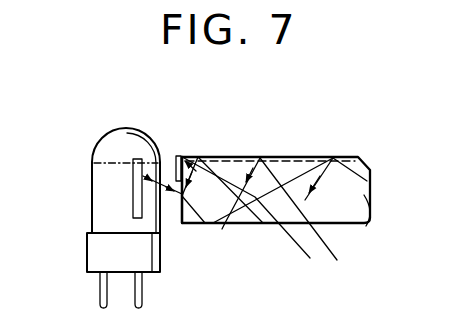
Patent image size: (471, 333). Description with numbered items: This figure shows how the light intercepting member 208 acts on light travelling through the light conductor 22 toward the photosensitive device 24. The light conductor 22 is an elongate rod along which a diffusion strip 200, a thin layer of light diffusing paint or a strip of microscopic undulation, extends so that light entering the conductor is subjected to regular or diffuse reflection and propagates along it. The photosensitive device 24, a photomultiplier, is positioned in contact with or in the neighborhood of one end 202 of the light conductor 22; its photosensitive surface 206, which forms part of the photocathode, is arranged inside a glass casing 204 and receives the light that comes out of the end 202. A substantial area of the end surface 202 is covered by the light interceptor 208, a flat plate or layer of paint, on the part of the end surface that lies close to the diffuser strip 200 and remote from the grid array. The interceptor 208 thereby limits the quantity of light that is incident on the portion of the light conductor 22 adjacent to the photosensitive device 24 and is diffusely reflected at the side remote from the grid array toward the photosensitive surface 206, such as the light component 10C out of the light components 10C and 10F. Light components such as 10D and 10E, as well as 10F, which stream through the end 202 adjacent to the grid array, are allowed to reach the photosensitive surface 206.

The photosensitive device 24 is at (78, 225).
The glass casing 204 is at (92, 196).
The photosensitive surface 206 is at (97, 163).
The light intercepting member 208 is at (176, 157).
The light conductor 22 is at (312, 157).
The diffusion strip 200 is at (372, 170).
The end surface of the light conductor 202 is at (176, 224).
The light component 10C is at (188, 160).
The light component 10D is at (187, 225).
The light component 10E is at (222, 224).
The light component 10F is at (261, 157).